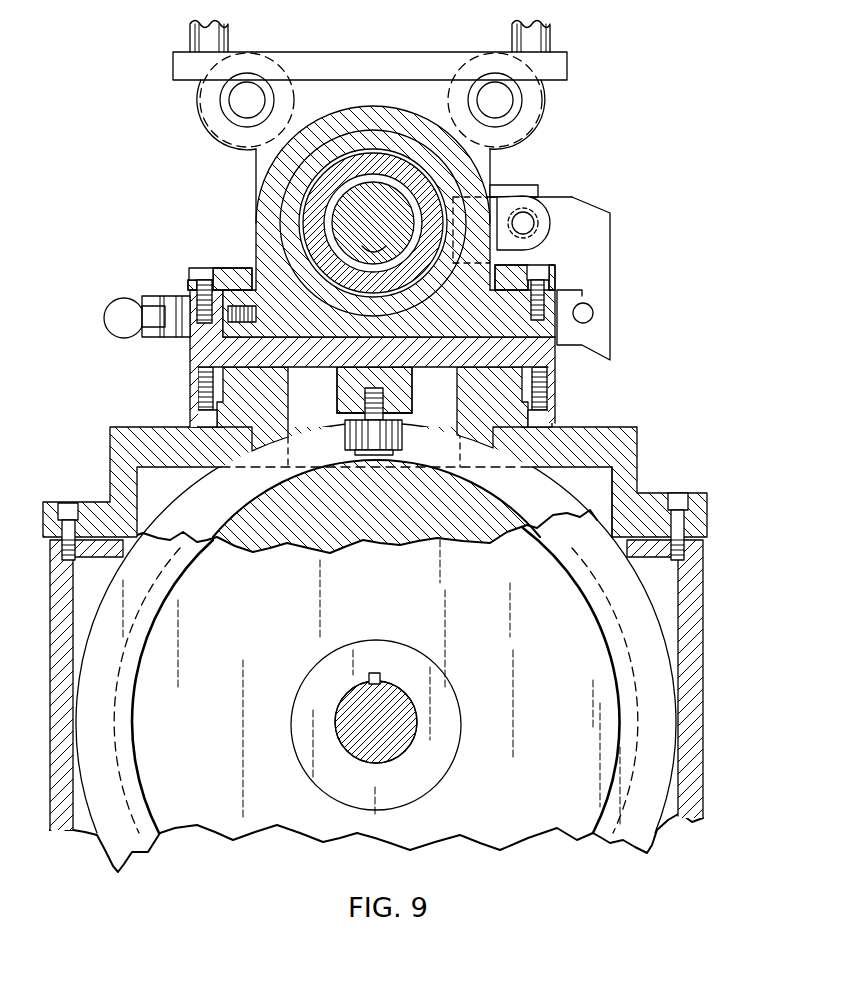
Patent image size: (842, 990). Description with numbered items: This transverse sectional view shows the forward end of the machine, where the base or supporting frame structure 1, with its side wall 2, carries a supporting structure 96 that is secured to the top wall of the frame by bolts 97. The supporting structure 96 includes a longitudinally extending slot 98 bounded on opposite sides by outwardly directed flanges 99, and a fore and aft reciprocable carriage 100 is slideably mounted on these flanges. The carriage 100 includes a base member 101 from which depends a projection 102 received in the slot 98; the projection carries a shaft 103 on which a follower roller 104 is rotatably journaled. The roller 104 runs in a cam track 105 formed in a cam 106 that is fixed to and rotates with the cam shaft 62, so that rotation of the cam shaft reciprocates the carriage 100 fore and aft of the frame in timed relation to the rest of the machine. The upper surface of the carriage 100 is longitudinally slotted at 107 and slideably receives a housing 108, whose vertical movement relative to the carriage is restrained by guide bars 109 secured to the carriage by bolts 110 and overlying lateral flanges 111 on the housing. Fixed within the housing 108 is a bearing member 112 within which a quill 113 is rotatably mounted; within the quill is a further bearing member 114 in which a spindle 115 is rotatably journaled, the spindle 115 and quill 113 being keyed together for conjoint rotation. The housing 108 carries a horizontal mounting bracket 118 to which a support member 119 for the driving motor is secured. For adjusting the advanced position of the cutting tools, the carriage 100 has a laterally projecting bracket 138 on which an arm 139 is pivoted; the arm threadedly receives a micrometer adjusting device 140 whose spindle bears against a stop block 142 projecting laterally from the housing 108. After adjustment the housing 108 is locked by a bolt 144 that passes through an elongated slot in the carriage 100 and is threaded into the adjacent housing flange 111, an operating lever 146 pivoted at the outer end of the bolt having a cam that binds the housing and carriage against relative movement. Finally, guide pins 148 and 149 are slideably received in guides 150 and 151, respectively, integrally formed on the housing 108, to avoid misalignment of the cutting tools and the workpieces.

The supporting frame structure 1 is at (710, 702).
The side wall 2 is at (703, 614).
The cam shaft 62 is at (353, 699).
The supporting structure 96 is at (652, 437).
The bolts 97 is at (688, 495).
The longitudinally extending slot 98 is at (462, 395).
The outwardly directed flanges 99 is at (220, 384).
The fore and aft reciprocable carriage 100 is at (186, 353).
The base member 101 is at (318, 367).
The projection 102 is at (337, 400).
The shaft 103 is at (396, 412).
The follower roller 104 is at (400, 438).
The cam track 105 is at (193, 500).
The cam 106 is at (597, 515).
The longitudinal slot 107 is at (500, 337).
The housing 108 is at (248, 238).
The guide bars 109 is at (212, 268).
The bolts 110 is at (194, 274).
The lateral flanges 111 is at (254, 262).
The bearing member 112 is at (262, 186).
The quill 113 is at (342, 168).
The bearing member 114 is at (278, 214).
The spindle 115 is at (370, 262).
The horizontal mounting bracket 118 is at (352, 55).
The support member 119 is at (228, 38).
The laterally projecting bracket 138 is at (610, 320).
The arm 139 is at (602, 203).
The micrometer adjusting device 140 is at (566, 197).
The stop block 142 is at (510, 190).
The bolt 144 is at (256, 314).
The operating lever 146 is at (112, 312).
The guide pin 148 is at (263, 97).
The guide pin 149 is at (514, 100).
The guide 150 is at (200, 100).
The guide 151 is at (530, 120).